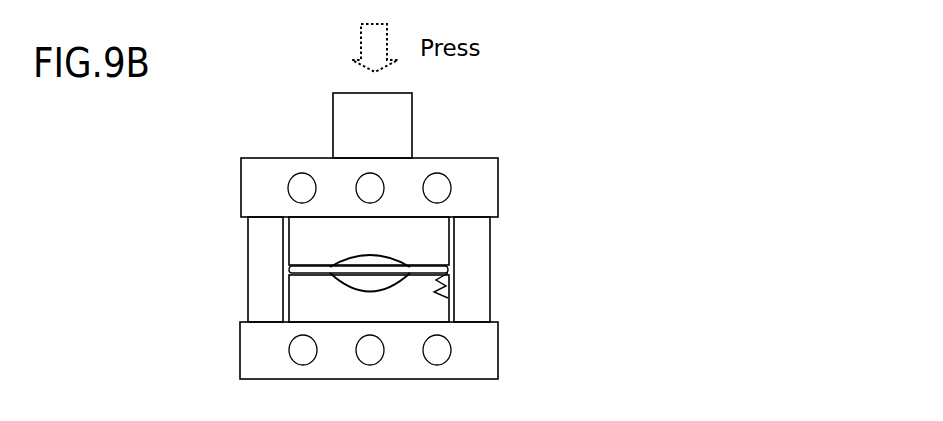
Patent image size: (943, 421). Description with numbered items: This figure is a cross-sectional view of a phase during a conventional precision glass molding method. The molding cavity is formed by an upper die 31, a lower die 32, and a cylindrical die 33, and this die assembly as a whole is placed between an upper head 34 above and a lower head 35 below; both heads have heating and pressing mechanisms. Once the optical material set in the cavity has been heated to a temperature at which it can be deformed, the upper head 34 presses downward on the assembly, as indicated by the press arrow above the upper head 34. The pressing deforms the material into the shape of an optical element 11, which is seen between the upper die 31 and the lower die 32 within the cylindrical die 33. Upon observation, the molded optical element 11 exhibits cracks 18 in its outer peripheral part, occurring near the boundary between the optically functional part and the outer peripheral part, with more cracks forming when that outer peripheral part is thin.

The optical element 11 is at (450, 266).
The cracks 18 is at (437, 296).
The upper die 31 is at (318, 233).
The lower die 32 is at (300, 308).
The cylindrical die 33 is at (258, 259).
The upper head 34 is at (473, 187).
The lower head 35 is at (475, 352).